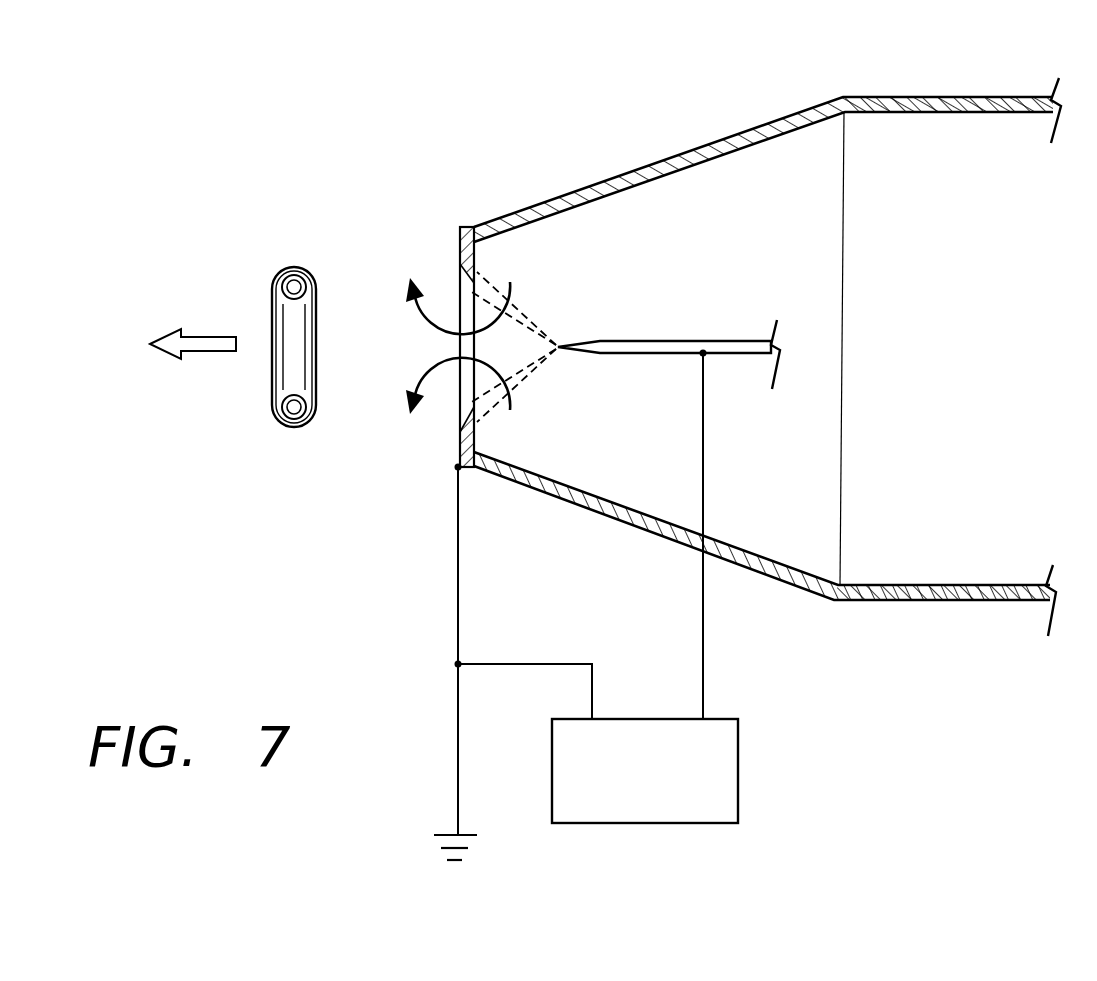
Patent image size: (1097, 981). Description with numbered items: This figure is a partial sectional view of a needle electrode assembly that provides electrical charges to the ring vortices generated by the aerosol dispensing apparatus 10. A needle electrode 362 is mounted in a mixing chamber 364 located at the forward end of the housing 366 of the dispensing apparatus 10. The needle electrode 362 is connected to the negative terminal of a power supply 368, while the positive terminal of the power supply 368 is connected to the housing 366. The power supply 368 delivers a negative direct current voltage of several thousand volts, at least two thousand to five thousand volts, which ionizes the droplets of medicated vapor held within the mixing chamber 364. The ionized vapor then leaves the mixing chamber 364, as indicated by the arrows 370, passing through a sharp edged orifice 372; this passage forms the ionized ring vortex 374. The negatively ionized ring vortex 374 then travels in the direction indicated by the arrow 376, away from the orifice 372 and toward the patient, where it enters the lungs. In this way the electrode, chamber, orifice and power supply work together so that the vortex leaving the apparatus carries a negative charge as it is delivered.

The dispensing apparatus 10 is at (583, 124).
The needle electrode 362 is at (650, 340).
The mixing chamber 364 is at (933, 454).
The housing 366 is at (893, 96).
The power supply 368 is at (740, 746).
The arrows 370 is at (450, 372).
The sharp edged orifice 372 is at (462, 283).
The ionized ring vortex 374 is at (286, 271).
The arrow 376 is at (201, 337).